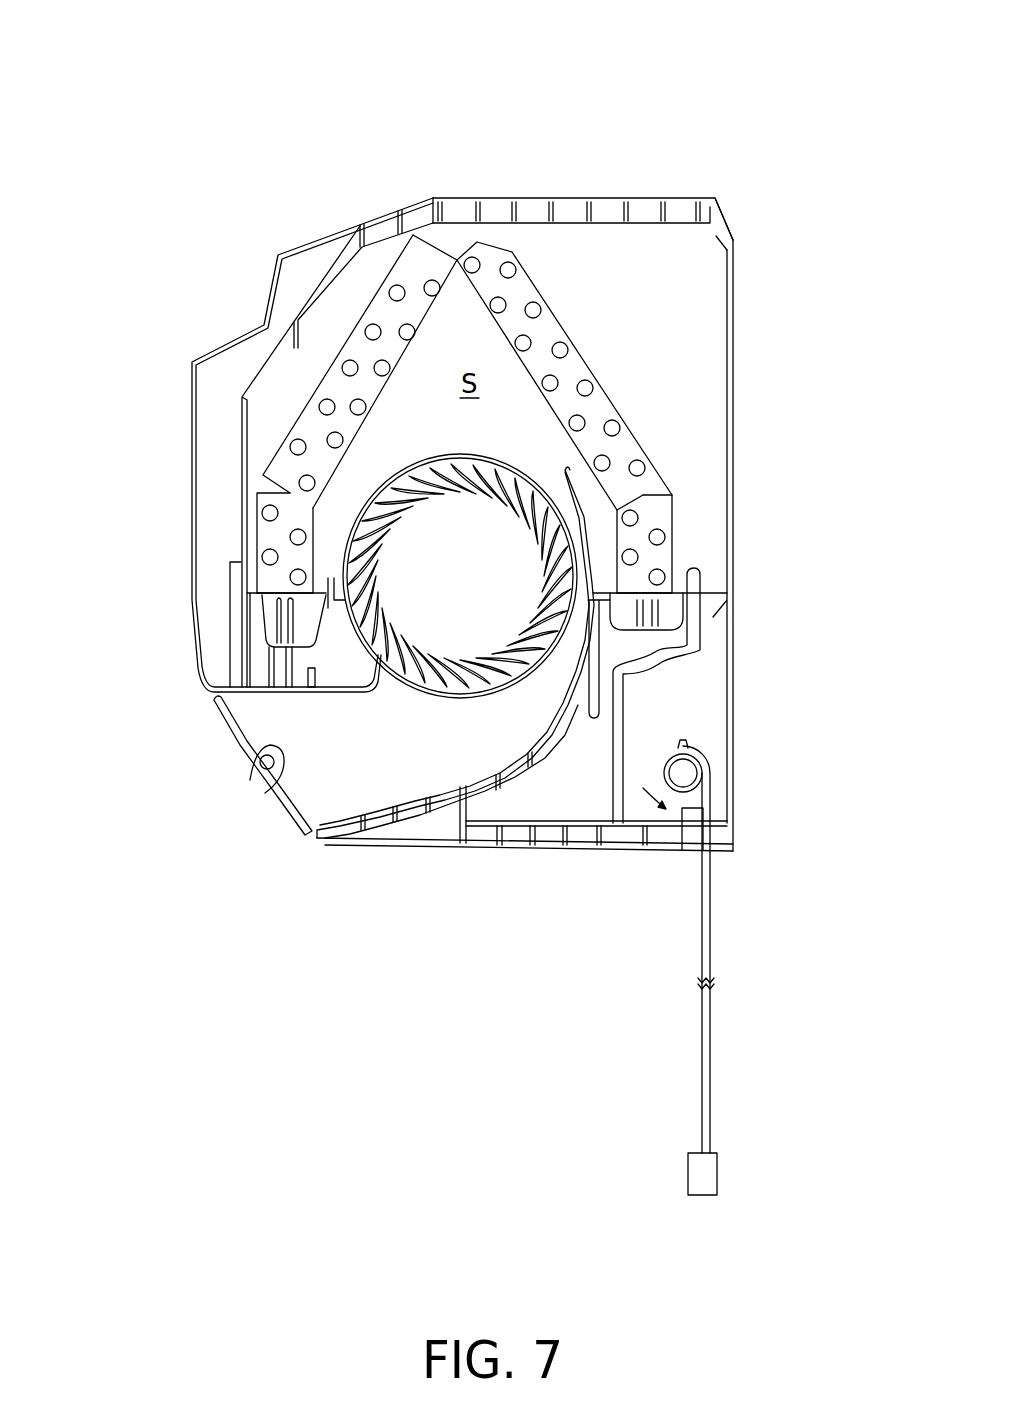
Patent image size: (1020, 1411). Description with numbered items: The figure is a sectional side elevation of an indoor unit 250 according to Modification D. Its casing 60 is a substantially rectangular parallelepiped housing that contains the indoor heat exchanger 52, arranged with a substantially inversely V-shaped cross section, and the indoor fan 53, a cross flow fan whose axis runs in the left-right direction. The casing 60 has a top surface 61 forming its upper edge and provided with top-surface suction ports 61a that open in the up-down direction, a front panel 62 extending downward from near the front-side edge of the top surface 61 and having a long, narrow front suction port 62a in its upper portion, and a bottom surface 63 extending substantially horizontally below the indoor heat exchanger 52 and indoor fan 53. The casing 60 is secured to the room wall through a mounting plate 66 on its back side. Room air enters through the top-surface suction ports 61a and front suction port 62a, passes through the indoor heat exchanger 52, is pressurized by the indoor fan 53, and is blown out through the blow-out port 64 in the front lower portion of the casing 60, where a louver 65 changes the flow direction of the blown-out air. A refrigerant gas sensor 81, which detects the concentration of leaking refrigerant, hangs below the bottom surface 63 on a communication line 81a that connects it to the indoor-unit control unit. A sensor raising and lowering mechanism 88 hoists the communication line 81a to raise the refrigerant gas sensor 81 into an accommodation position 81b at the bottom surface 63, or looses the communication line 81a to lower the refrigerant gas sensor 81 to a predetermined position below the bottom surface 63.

The indoor unit 250 is at (676, 130).
The top surface 61 is at (527, 152).
The top-surface suction ports 61a is at (567, 198).
The front panel 62 is at (187, 353).
The front suction port 62a is at (217, 350).
The indoor heat exchanger 52 is at (606, 376).
The indoor fan 53 is at (429, 696).
The mounting plate 66 is at (738, 365).
The sensor raising and lowering mechanism 88 is at (653, 741).
The louver 65 is at (220, 738).
The blow-out port 64 is at (298, 788).
The bottom surface 63 is at (453, 862).
The casing 60 is at (520, 878).
The accommodation position 81b is at (696, 849).
The communication line 81a is at (713, 1096).
The refrigerant gas sensor 81 is at (718, 1174).